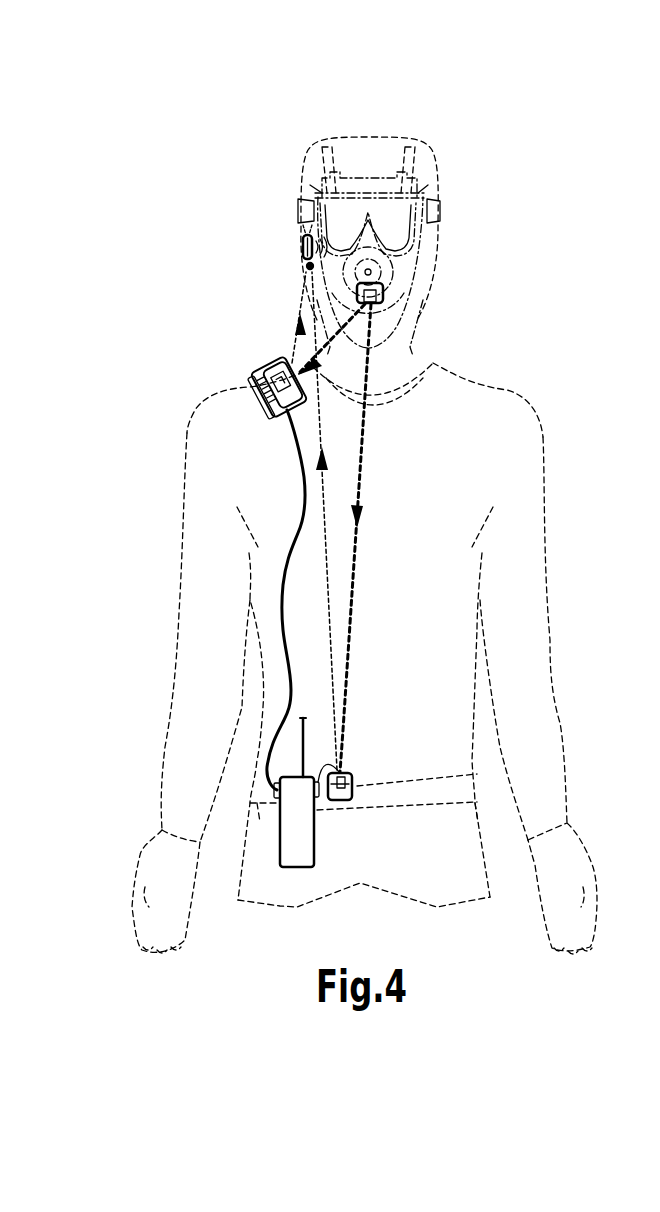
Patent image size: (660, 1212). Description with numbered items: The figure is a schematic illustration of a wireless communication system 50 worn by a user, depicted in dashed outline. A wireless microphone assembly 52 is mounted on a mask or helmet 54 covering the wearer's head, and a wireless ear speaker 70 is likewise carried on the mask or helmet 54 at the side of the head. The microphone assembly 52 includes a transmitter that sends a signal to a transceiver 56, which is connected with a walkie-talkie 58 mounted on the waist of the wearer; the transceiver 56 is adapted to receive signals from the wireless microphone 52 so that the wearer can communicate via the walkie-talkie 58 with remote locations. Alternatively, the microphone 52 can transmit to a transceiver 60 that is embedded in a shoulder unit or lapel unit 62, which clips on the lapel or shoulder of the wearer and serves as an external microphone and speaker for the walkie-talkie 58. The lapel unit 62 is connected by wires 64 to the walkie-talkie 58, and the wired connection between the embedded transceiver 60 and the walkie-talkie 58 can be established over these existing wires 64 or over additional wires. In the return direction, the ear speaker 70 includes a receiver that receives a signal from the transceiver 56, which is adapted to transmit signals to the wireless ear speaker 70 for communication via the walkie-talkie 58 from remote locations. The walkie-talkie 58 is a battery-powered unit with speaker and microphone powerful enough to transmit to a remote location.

The communication system 50 is at (265, 511).
The wireless microphone assembly 52 is at (385, 291).
The mask or helmet 54 is at (442, 180).
The transceiver 56 is at (354, 783).
The walkie-talkie 58 is at (314, 843).
The transceiver 60 is at (276, 360).
The lapel unit 62 is at (257, 372).
The wires 64 is at (297, 444).
The wireless ear speaker 70 is at (302, 247).